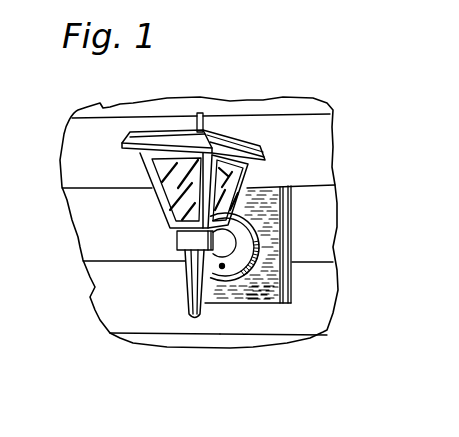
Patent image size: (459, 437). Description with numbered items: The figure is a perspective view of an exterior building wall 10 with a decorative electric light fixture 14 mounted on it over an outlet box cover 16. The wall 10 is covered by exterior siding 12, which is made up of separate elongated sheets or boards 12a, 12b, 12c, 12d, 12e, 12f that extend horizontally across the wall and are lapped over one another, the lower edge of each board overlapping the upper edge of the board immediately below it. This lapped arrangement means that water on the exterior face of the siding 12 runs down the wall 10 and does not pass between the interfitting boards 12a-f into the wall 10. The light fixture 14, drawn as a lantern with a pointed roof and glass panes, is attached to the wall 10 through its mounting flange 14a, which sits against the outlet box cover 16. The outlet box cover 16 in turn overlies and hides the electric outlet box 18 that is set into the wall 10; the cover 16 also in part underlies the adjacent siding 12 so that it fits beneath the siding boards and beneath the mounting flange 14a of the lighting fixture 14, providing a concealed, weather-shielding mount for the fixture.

The building wall 10 is at (342, 175).
The exterior siding 12 is at (336, 117).
The siding board 12a is at (101, 102).
The siding board 12b is at (61, 159).
The siding board 12c is at (78, 242).
The siding board 12d is at (336, 245).
The siding board 12e is at (97, 304).
The siding board 12f is at (140, 343).
The electric light fixture 14 is at (226, 141).
The mounting flange 14a is at (249, 282).
The outlet box cover 16 is at (413, 185).
The electric outlet box 18 is at (292, 202).